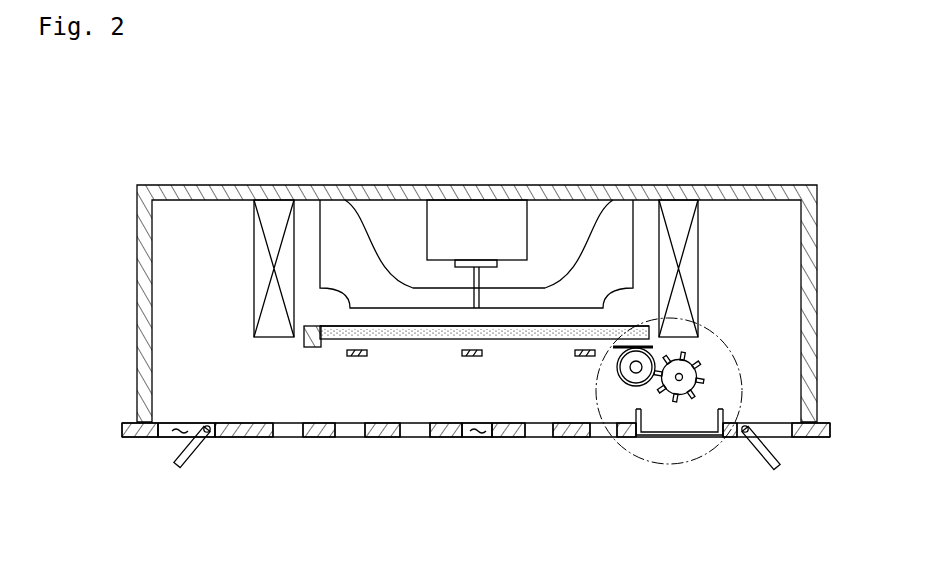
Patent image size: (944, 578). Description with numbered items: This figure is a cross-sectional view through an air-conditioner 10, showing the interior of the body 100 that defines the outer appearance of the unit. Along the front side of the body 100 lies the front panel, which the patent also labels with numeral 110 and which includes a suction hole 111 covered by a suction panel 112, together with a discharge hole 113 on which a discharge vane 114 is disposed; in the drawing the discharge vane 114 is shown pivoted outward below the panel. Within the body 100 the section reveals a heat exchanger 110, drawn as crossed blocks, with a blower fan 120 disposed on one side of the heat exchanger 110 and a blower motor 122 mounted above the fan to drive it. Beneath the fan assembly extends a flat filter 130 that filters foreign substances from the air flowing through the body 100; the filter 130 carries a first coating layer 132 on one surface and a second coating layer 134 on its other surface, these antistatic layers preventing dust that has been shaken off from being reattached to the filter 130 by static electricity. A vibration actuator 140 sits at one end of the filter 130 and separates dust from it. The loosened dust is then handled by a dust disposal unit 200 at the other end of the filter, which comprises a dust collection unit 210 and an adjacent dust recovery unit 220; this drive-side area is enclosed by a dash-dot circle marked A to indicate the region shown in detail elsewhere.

The air-conditioner 10 is at (855, 80).
The body 100 is at (743, 185).
The heat exchanger 110 is at (439, 328).
The suction hole 111 is at (477, 438).
The suction panel 112 is at (252, 438).
The discharge hole 113 is at (175, 423).
The discharge vane 114 is at (190, 448).
The blower fan 120 is at (348, 213).
The blower motor 122 is at (475, 213).
The filter 130 is at (484, 311).
The first coating layer 132 is at (572, 327).
The second coating layer 134 is at (655, 348).
The vibration actuator 140 is at (310, 348).
The dust disposal unit 200 is at (667, 457).
The dust collection unit 210 is at (625, 386).
The dust recovery unit 220 is at (690, 395).
The detail region A is at (742, 376).